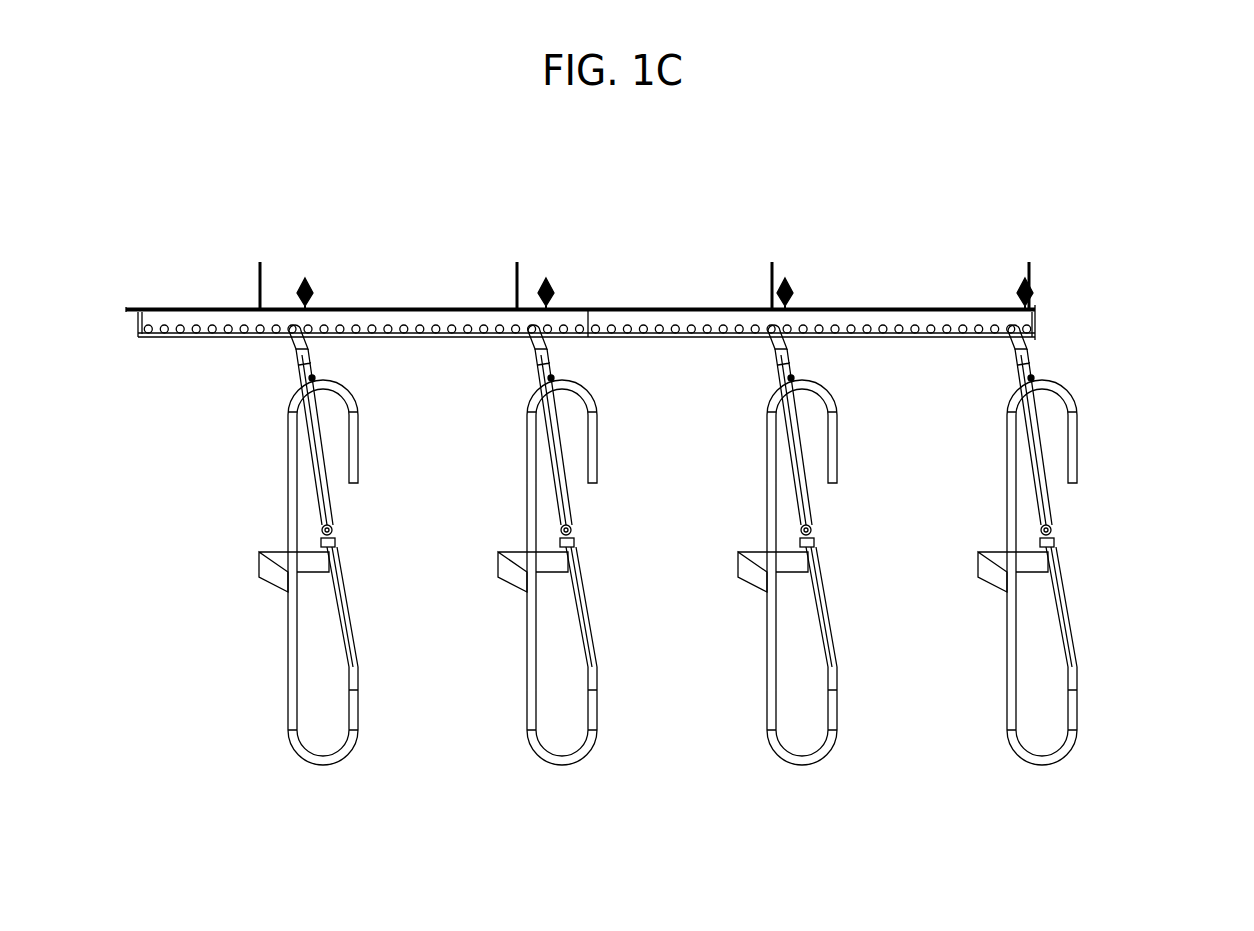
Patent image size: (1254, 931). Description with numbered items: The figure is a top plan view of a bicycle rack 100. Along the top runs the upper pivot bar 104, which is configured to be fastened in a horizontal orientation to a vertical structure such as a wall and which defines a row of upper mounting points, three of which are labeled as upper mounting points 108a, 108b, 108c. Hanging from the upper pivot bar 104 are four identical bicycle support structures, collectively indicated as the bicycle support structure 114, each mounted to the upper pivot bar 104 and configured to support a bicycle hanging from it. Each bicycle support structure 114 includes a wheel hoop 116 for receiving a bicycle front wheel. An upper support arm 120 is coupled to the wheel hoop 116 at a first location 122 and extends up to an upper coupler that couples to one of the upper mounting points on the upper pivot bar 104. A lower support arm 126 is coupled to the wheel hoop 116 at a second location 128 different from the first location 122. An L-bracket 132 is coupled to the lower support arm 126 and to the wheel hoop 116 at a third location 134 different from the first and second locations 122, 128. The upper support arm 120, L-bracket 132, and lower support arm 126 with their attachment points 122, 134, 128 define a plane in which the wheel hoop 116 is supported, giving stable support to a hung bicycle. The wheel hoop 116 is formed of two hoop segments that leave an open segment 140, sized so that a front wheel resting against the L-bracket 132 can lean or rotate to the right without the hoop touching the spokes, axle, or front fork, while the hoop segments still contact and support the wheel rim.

The bicycle rack 100 is at (319, 165).
The upper pivot bar 104 is at (147, 339).
The upper mounting point 108a is at (371, 338).
The upper mounting point 108b is at (387, 327).
The upper mounting point 108c is at (402, 338).
The bicycle support structure 114 is at (1122, 345).
The wheel hoop 116 is at (765, 463).
The upper support arm 120 is at (787, 355).
The first location 122 is at (793, 378).
The lower support arm 126 is at (808, 512).
The second location 128 is at (835, 668).
The L-bracket 132 is at (745, 583).
The third location 134 is at (767, 572).
The open segment 140 is at (363, 483).